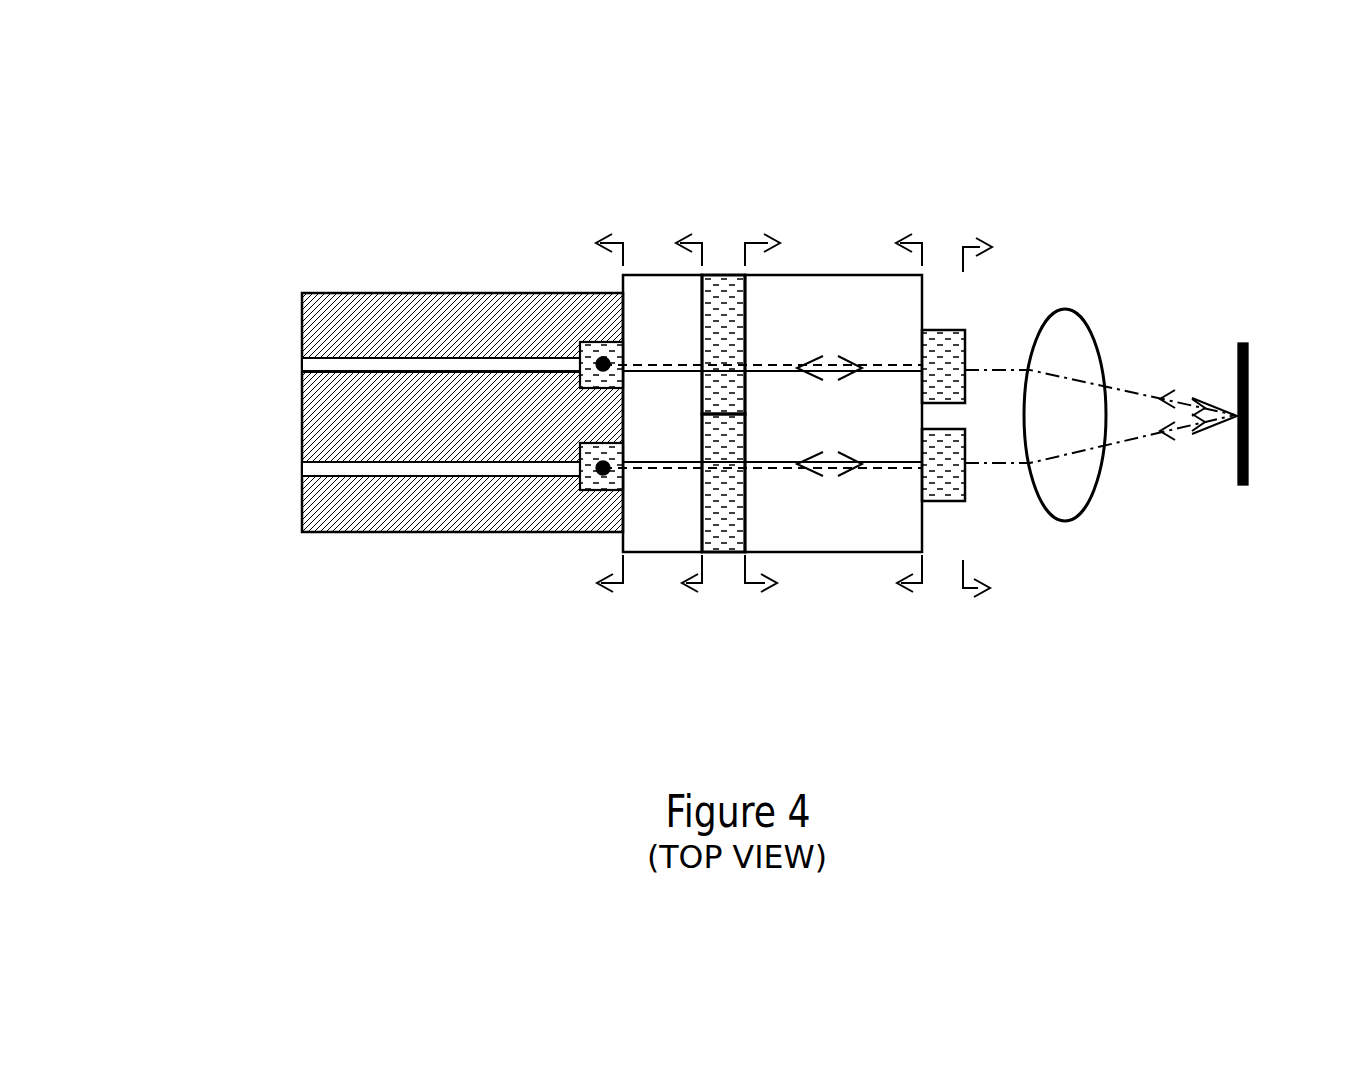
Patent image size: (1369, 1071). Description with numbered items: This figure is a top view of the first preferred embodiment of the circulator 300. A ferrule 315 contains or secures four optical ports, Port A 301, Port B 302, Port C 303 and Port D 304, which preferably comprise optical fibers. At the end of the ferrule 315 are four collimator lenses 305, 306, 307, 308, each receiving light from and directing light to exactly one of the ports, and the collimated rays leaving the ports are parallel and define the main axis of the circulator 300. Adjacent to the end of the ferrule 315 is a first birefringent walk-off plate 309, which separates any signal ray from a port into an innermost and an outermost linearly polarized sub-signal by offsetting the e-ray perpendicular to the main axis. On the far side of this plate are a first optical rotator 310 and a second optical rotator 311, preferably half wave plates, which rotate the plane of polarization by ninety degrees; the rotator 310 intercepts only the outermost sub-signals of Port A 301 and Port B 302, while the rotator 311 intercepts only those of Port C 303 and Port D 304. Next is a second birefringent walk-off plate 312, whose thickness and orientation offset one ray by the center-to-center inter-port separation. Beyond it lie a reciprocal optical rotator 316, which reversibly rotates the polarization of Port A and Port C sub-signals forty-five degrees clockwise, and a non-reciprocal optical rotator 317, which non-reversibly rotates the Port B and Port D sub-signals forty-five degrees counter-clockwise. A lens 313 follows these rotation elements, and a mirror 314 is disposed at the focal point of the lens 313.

The circulator 300 is at (476, 73).
The Port A 301 is at (323, 364).
The Port B 302 is at (323, 465).
The Port C 303 is at (562, 357).
The Port D 304 is at (559, 488).
The collimator lens 305 is at (524, 275).
The collimator lens 306 is at (520, 549).
The collimator lens 307 is at (601, 361).
The collimator lens 308 is at (603, 470).
The first birefringent walk-off plate 309 is at (648, 552).
The first optical rotator 310 is at (722, 290).
The second optical rotator 311 is at (712, 351).
The second birefringent walk-off plate 312 is at (835, 275).
The lens 313 is at (1095, 498).
The mirror 314 is at (1242, 340).
The ferrule 315 is at (397, 293).
The reciprocal optical rotator 316 is at (967, 332).
The non-reciprocal optical rotator 317 is at (965, 485).